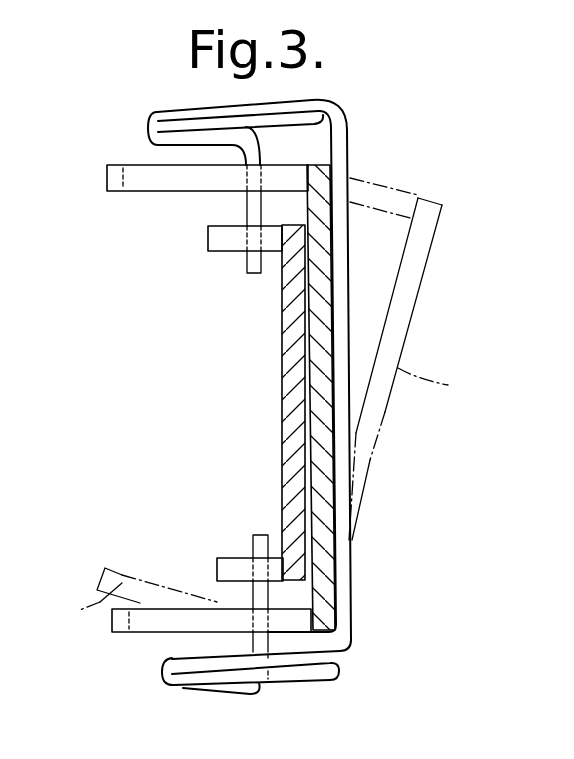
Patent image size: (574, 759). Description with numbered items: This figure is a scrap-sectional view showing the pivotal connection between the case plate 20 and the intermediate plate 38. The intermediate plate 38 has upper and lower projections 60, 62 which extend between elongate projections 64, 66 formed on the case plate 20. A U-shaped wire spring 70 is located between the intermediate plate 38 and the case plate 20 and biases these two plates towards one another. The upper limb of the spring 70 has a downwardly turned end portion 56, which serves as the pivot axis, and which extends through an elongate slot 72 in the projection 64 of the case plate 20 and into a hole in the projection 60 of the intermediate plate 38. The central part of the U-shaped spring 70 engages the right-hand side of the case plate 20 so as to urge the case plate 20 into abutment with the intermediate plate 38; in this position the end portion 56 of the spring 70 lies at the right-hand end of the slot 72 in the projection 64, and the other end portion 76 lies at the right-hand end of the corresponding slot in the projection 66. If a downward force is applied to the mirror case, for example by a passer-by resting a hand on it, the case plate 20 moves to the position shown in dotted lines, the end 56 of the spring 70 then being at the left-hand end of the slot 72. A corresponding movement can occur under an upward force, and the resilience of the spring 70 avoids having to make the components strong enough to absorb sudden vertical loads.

The case plate 20 is at (331, 410).
The intermediate plate 38 is at (282, 371).
The end portion 56 is at (247, 262).
The upper projection 60 is at (208, 233).
The lower projection 62 is at (225, 567).
The elongate projection 64 is at (142, 163).
The elongate projection 66 is at (112, 624).
The U-shaped wire spring 70 is at (341, 508).
The elongate slot 72 is at (170, 178).
The end portion 76 is at (259, 533).